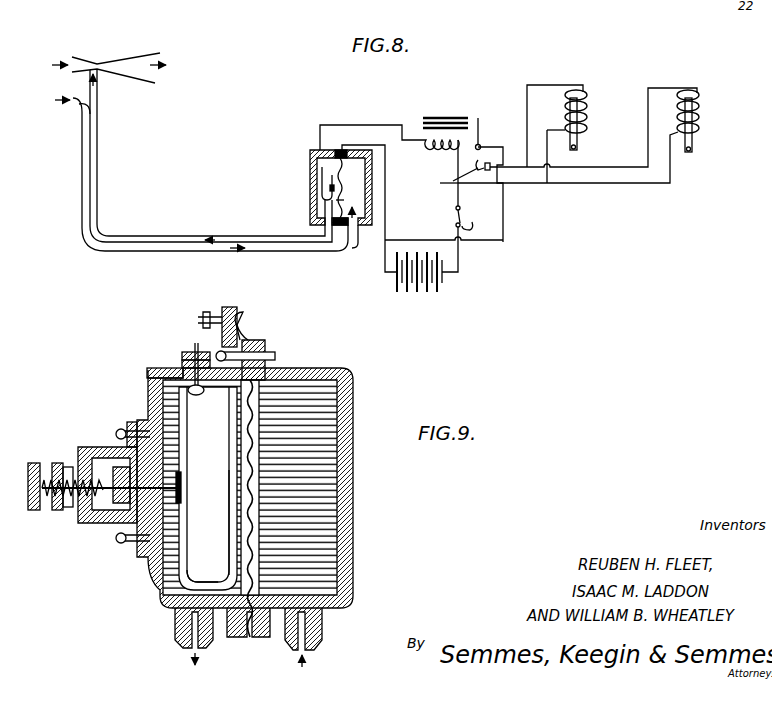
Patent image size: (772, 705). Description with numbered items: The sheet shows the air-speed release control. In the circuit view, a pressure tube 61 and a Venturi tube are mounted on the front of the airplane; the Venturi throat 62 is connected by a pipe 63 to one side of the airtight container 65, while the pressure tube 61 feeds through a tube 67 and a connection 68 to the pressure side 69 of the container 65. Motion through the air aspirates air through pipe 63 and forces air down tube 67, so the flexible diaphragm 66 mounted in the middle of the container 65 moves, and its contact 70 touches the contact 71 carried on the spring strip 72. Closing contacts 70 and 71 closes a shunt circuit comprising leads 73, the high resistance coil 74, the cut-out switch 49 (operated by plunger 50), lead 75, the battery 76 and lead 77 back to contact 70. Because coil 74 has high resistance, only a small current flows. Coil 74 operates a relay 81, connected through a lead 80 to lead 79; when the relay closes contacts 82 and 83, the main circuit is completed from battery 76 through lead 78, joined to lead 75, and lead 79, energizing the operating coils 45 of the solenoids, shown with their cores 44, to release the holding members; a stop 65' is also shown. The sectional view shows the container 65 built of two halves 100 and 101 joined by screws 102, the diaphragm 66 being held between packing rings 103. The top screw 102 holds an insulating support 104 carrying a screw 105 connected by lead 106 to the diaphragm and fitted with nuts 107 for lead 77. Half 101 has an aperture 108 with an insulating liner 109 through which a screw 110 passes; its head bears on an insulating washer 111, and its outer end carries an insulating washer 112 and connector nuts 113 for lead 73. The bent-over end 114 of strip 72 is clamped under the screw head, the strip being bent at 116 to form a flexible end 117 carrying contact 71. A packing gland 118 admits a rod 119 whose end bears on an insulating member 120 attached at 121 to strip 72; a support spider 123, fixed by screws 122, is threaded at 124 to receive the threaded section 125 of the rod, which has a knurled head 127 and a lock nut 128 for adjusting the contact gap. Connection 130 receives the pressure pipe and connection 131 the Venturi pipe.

In FIG. 8, the core 44 is at (578, 140).
In FIG. 8, the operating coils 45 is at (587, 106).
In FIG. 8, the cut-out switch 49 is at (456, 209).
In FIG. 8, the operating plunger 50 is at (479, 220).
In FIG. 8, the pressure tube 61 is at (76, 108).
In FIG. 8, the throat 62 is at (97, 62).
In FIG. 8, the pipe 63 is at (98, 122).
In FIG. 8, the airtight container 65 is at (332, 170).
In FIG. 9, the airtight container 65 is at (376, 470).
In FIG. 8, the housing contact 65' is at (302, 192).
In FIG. 9, the housing contact 65' is at (131, 620).
In FIG. 9, the flexible diaphragm 66 is at (255, 550).
In FIG. 8, the tube 67 is at (82, 188).
In FIG. 8, the connection 68 is at (358, 238).
In FIG. 8, the pressure side 69 is at (332, 221).
In FIG. 9, the pressure side 69 is at (325, 505).
In FIG. 8, the contact 70 is at (341, 186).
In FIG. 9, the contact 70 is at (252, 503).
In FIG. 8, the contact 71 is at (322, 172).
In FIG. 9, the contact 71 is at (233, 507).
In FIG. 8, the spring 72 is at (317, 162).
In FIG. 9, the spring 72 is at (137, 418).
In FIG. 8, the leads 73 is at (355, 125).
In FIG. 8, the high resistance coil 74 is at (436, 146).
In FIG. 8, the lead 75 is at (462, 270).
In FIG. 8, the battery 76 is at (410, 283).
In FIG. 8, the lead 77 is at (385, 193).
In FIG. 8, the lead 78 is at (520, 185).
In FIG. 8, the lead 79 is at (605, 167).
In FIG. 8, the lead 80 is at (503, 242).
In FIG. 8, the relay 81 is at (481, 144).
In FIG. 8, the contact 82 is at (487, 172).
In FIG. 8, the contact 83 is at (457, 179).
In FIG. 9, the half 100 is at (353, 531).
In FIG. 9, the half 101 is at (150, 590).
In FIG. 9, the screws 102 is at (276, 355).
In FIG. 9, the packing rings 103 is at (250, 640).
In FIG. 9, the insulating support 104 is at (230, 307).
In FIG. 9, the screw 105 is at (248, 330).
In FIG. 9, the lead 106 is at (262, 338).
In FIG. 9, the nuts 107 is at (206, 312).
In FIG. 9, the aperture 108 is at (160, 369).
In FIG. 9, the insulating liner 109 is at (182, 362).
In FIG. 9, the screw 110 is at (194, 345).
In FIG. 9, the insulating washer 111 is at (148, 380).
In FIG. 9, the insulating washer 112 is at (183, 360).
In FIG. 9, the connector nuts 113 is at (182, 354).
In FIG. 9, the bent-over end 114 is at (153, 404).
In FIG. 9, the bend 116 is at (203, 580).
In FIG. 9, the flexible end 117 is at (229, 540).
In FIG. 9, the packing gland 118 is at (103, 523).
In FIG. 9, the rod 119 is at (115, 432).
In FIG. 9, the insulating member 120 is at (176, 503).
In FIG. 9, the attachment 121 is at (184, 500).
In FIG. 9, the screws 122 is at (118, 544).
In FIG. 9, the support spider 123 is at (83, 520).
In FIG. 9, the screw thread 124 is at (58, 510).
In FIG. 9, the screw threaded section 125 is at (66, 466).
In FIG. 9, the knurled adjusting head 127 is at (33, 510).
In FIG. 9, the lock nut 128 is at (45, 478).
In FIG. 9, the connection 130 is at (320, 640).
In FIG. 9, the connection 131 is at (175, 640).